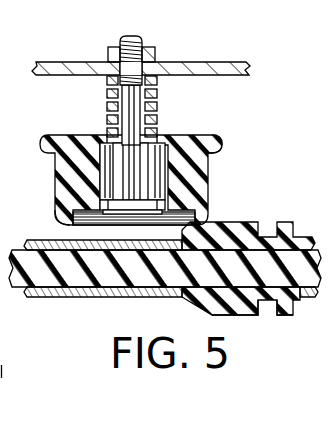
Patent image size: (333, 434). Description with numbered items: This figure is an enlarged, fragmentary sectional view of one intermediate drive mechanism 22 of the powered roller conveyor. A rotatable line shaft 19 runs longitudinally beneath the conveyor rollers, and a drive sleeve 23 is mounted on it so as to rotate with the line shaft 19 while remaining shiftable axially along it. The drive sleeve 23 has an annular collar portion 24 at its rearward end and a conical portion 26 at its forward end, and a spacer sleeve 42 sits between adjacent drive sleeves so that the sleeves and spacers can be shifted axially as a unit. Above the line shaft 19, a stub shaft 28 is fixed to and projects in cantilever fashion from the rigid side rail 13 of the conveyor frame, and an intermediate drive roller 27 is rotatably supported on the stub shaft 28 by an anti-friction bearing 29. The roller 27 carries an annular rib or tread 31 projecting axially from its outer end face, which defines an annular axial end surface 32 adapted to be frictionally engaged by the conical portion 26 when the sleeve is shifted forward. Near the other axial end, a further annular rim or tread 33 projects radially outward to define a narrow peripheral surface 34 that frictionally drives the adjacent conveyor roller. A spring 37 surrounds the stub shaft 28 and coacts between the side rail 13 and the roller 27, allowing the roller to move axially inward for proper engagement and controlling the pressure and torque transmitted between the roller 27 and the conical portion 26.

The side rail 13 is at (70, 68).
The spring 37 is at (108, 97).
The stub shaft 28 is at (157, 107).
The annular rim or tread 33 is at (218, 139).
The peripheral surface 34 is at (223, 145).
The intermediate drive roller 27 is at (192, 183).
The anti-friction bearing 29 is at (107, 170).
The intermediate drive mechanism 22 is at (226, 205).
The annular rib or tread 31 is at (64, 219).
The annular axial end surface 32 is at (66, 230).
The spacer sleeve 42 is at (90, 294).
The conical portion 26 is at (183, 308).
The drive sleeve 23 is at (245, 314).
The annular collar portion 24 is at (288, 312).
The line shaft 19 is at (302, 272).